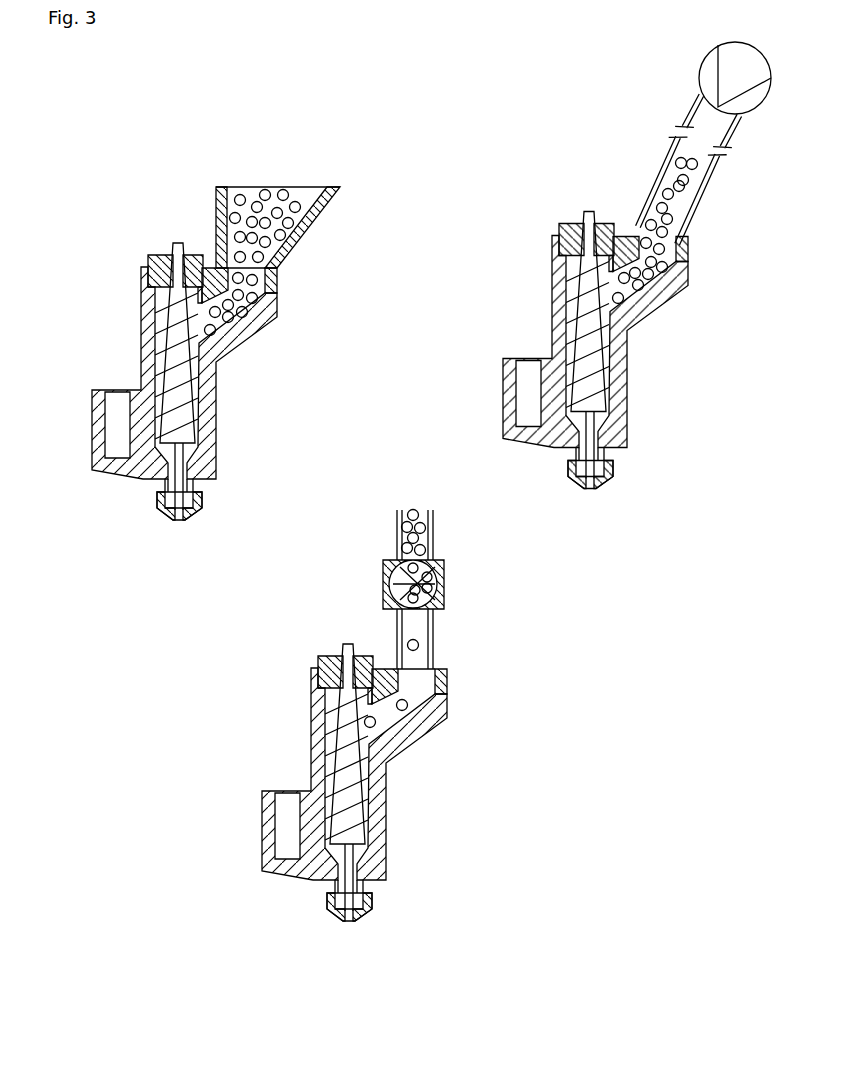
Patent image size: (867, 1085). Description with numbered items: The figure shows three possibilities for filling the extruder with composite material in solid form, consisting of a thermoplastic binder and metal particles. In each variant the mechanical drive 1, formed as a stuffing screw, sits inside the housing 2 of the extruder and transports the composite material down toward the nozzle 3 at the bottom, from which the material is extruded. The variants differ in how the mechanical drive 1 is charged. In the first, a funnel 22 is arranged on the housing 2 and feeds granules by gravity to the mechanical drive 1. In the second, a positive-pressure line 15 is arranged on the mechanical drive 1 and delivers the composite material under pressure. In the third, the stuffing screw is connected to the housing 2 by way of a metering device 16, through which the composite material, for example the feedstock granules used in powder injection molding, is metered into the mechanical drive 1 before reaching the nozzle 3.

The mechanical drive 1 is at (472, 779).
The housing 2 is at (472, 824).
The nozzle 3 is at (472, 909).
The funnel 22 is at (270, 243).
The positive-pressure line 15 is at (675, 194).
The metering device 16 is at (440, 595).